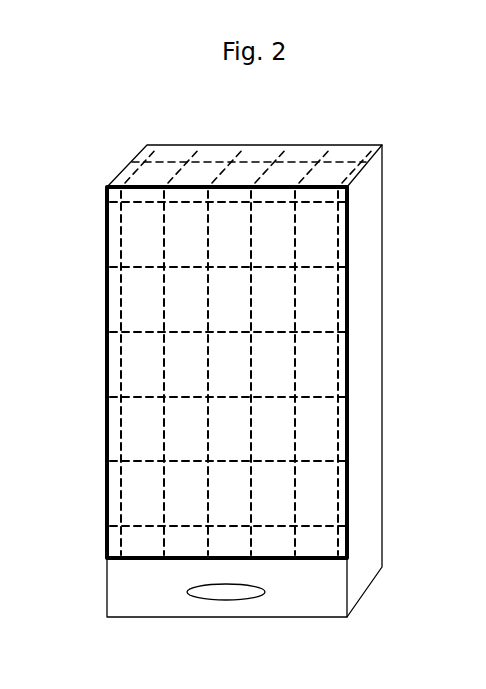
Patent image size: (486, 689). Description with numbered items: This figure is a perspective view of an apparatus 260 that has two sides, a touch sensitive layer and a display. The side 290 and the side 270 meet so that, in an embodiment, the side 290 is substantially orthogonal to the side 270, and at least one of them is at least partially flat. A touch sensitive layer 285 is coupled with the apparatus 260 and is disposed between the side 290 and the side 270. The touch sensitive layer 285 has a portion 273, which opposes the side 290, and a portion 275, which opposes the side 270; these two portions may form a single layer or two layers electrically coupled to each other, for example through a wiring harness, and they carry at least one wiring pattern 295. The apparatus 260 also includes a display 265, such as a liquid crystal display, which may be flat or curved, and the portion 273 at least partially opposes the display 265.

The apparatus 260 is at (362, 122).
The display 265 is at (348, 243).
The side 270 is at (340, 150).
The portion 273 is at (163, 235).
The portion 275 is at (167, 162).
The touch sensitive layer 285 is at (295, 290).
The side 290 is at (318, 365).
The wiring pattern 295 is at (295, 432).